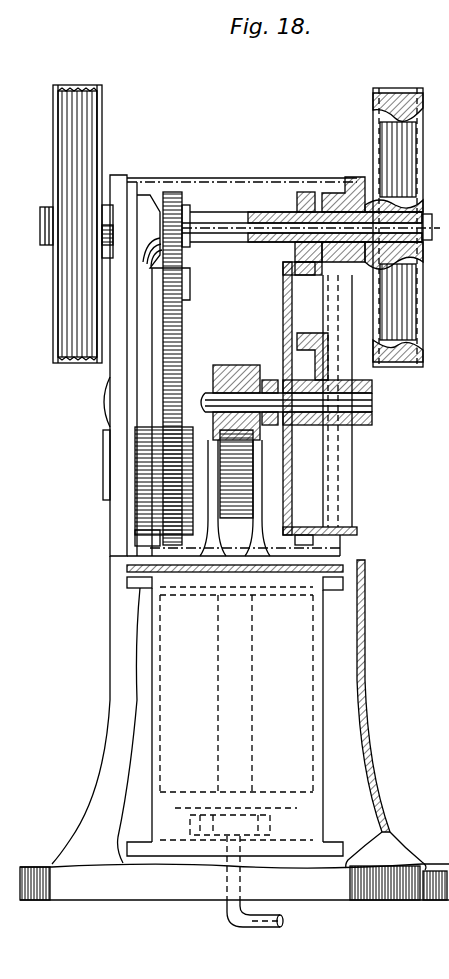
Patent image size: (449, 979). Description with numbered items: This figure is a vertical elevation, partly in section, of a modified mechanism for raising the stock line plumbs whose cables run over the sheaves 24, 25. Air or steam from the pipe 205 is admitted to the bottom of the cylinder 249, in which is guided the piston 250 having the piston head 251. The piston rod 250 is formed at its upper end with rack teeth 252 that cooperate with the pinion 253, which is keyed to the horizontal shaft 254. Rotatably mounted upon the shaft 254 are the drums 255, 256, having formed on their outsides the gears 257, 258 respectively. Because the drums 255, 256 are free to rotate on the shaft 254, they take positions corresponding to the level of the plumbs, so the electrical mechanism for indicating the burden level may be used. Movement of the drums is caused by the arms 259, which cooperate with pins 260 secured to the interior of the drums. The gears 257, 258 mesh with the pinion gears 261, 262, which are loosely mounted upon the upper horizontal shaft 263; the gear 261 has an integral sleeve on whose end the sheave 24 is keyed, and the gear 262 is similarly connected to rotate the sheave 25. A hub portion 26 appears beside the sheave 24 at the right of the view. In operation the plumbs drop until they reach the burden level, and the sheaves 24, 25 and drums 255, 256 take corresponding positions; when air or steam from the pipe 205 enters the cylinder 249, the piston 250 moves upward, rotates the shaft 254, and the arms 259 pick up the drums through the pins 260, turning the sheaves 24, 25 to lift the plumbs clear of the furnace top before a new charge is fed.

The sheave 24 is at (423, 117).
The sheave 25 is at (97, 113).
The pulley hub 26 is at (410, 259).
The pipe 205 is at (265, 927).
The cylinder 249 is at (320, 700).
The piston 250 is at (230, 680).
The piston head 251 is at (284, 800).
The rack teeth 252 is at (220, 463).
The pinion 253 is at (237, 366).
The horizontal shaft 254 is at (374, 405).
The drum 255 is at (305, 526).
The drum 256 is at (140, 508).
The gear 257 is at (315, 545).
The gear 258 is at (138, 536).
The arm 259 is at (355, 360).
The pin 260 is at (285, 335).
The pinion gear 261 is at (305, 192).
The pinion gear 262 is at (171, 191).
The upper horizontal shaft 263 is at (260, 222).